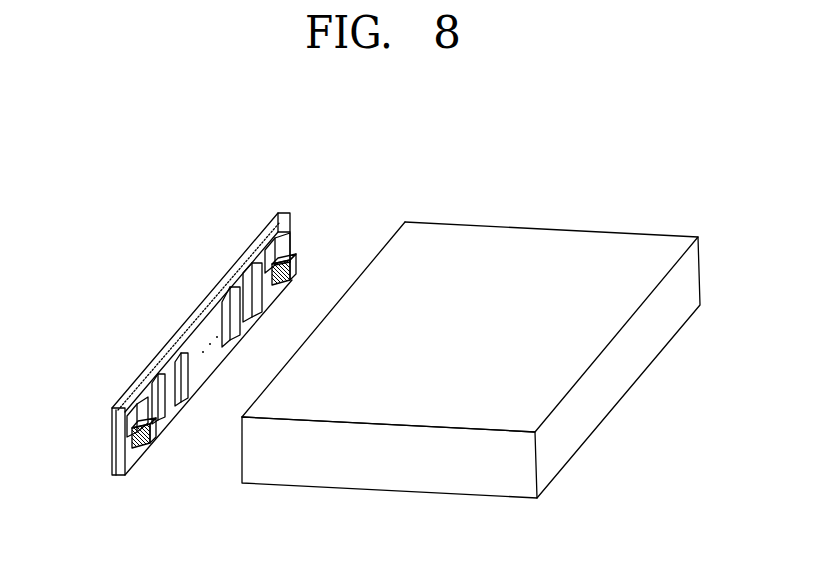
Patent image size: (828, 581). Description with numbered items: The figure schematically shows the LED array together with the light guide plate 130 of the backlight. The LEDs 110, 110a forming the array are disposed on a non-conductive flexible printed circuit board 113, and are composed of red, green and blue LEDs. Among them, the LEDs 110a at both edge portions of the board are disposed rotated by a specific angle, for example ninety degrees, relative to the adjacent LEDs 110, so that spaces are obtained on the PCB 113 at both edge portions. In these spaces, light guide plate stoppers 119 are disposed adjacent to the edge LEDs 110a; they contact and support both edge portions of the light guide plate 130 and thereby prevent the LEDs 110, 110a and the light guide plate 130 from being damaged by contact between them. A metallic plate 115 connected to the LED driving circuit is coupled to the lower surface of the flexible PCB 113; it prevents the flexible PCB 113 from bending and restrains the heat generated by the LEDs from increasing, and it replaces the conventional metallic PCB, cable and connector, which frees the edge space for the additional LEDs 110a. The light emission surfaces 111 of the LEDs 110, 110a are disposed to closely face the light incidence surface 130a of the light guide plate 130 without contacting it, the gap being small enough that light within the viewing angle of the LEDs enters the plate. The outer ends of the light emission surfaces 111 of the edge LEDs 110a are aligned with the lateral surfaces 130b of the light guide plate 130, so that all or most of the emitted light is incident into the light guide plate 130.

The LED 110 is at (255, 262).
The edge LED 110a is at (142, 397).
The light emission surface 111 is at (140, 420).
The flexible printed circuit board 113 is at (110, 467).
The metallic plate 115 is at (112, 442).
The light guide plate stopper 119 is at (147, 447).
The light guide plate 130 is at (530, 252).
The light incidence surface 130a is at (389, 238).
The lateral surface 130b is at (440, 222).